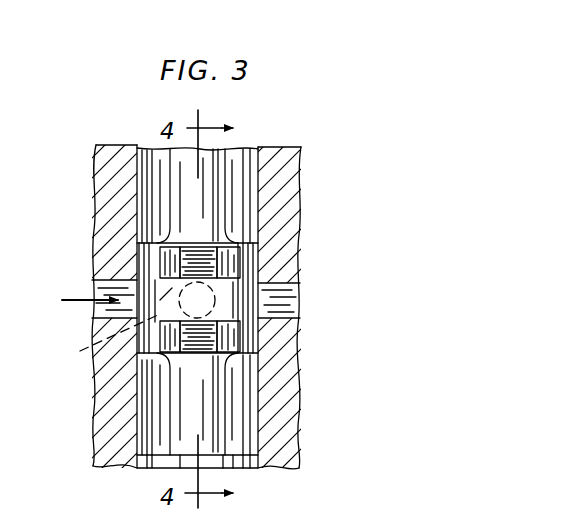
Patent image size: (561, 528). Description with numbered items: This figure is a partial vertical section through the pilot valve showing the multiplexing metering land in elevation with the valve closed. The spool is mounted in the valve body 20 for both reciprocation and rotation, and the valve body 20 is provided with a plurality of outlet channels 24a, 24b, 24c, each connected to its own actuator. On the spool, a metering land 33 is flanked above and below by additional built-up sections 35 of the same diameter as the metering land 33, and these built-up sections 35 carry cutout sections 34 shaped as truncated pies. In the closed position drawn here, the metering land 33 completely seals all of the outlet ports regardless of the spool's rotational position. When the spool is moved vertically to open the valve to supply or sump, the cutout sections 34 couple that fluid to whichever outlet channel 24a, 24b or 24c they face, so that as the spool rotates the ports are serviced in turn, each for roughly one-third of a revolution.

The valve body 20 is at (300, 161).
The outlet channel 24a is at (291, 298).
The outlet channel 24b is at (133, 291).
The outlet channel 24c is at (94, 340).
The metering land 33 is at (172, 303).
The cutout sections 34 is at (205, 252).
The built-up sections 35 is at (157, 258).